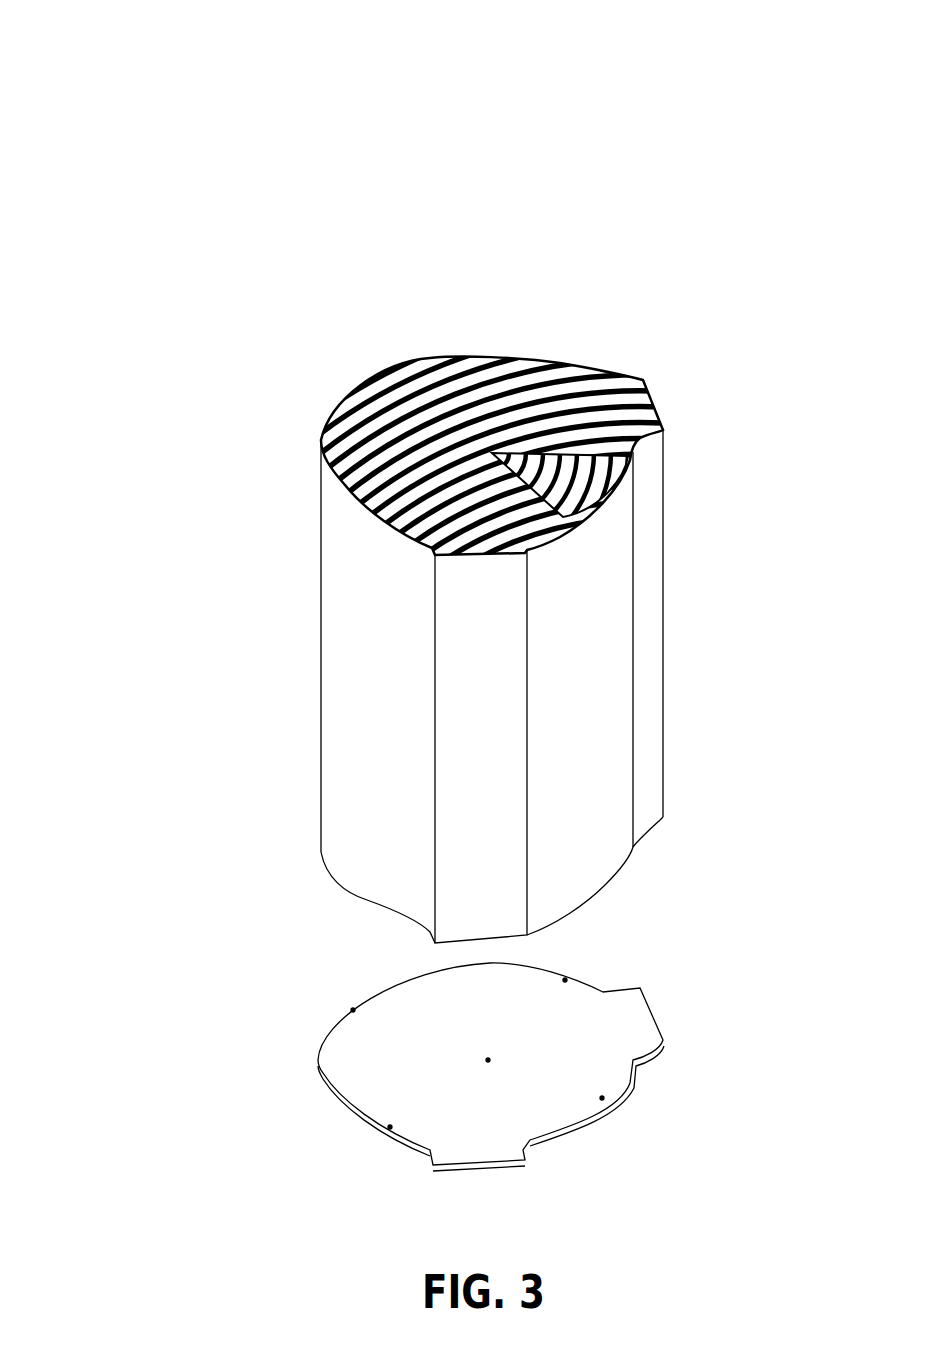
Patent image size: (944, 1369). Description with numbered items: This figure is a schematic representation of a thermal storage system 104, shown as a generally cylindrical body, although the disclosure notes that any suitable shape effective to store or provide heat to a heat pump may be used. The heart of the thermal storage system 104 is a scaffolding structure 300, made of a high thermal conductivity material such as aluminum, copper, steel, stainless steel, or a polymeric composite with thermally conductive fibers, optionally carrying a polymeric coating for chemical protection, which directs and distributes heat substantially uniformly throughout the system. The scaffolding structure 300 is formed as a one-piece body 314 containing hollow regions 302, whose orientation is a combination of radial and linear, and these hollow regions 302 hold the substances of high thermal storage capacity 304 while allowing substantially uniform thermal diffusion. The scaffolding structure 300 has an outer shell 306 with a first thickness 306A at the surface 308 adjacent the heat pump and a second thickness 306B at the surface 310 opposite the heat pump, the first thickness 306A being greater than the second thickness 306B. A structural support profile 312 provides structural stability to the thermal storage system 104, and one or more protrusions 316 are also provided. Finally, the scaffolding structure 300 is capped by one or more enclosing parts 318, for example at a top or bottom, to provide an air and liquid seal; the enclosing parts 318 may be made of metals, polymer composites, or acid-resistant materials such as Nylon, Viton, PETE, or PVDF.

The thermal storage system 104 is at (165, 85).
The scaffolding structure 300 is at (378, 375).
The hollow regions 302 is at (327, 415).
The substances of high thermal storage capacity 304 is at (509, 832).
The outer shell 306 is at (343, 848).
The first thickness 306A is at (600, 845).
The second thickness 306B is at (405, 365).
The surface adjacent a heat pump 308 is at (595, 876).
The surface opposite the heat pump 310 is at (509, 798).
The structural support profile 312 is at (633, 473).
The one-piece body 314 is at (590, 375).
The protrusions 316 is at (463, 680).
The enclosing parts 318 is at (342, 1075).